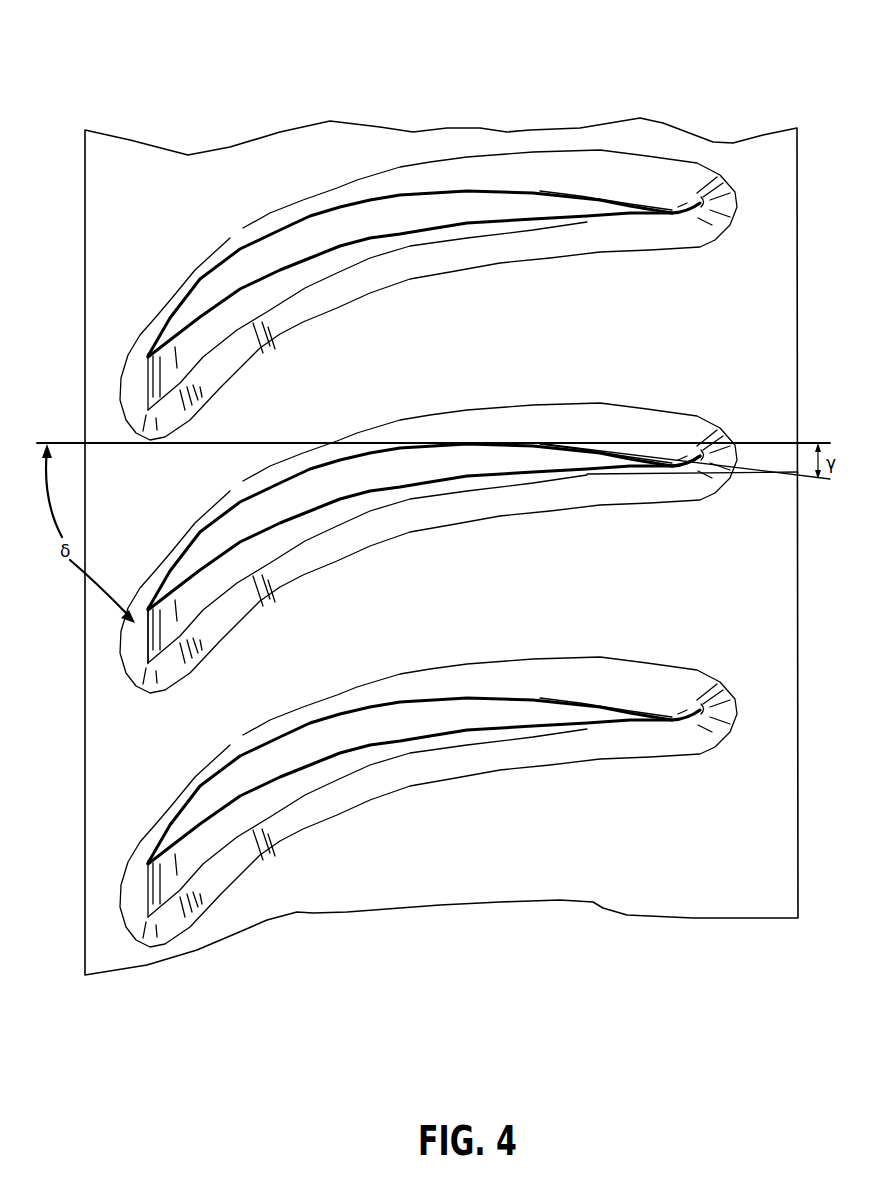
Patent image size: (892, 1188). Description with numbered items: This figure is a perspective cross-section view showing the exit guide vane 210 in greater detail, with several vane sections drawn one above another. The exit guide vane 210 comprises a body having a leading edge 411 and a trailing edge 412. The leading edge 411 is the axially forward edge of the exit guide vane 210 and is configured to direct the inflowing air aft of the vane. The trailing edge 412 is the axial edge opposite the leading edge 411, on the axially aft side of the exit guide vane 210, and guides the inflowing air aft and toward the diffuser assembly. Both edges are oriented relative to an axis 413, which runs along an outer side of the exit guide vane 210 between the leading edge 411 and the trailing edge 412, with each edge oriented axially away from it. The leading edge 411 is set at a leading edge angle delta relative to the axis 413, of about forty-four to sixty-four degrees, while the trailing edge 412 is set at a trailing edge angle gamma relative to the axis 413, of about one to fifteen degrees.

The exit guide vane 210 is at (543, 207).
The leading edge 411 is at (162, 593).
The trailing edge 412 is at (670, 467).
The axis 413 is at (763, 442).